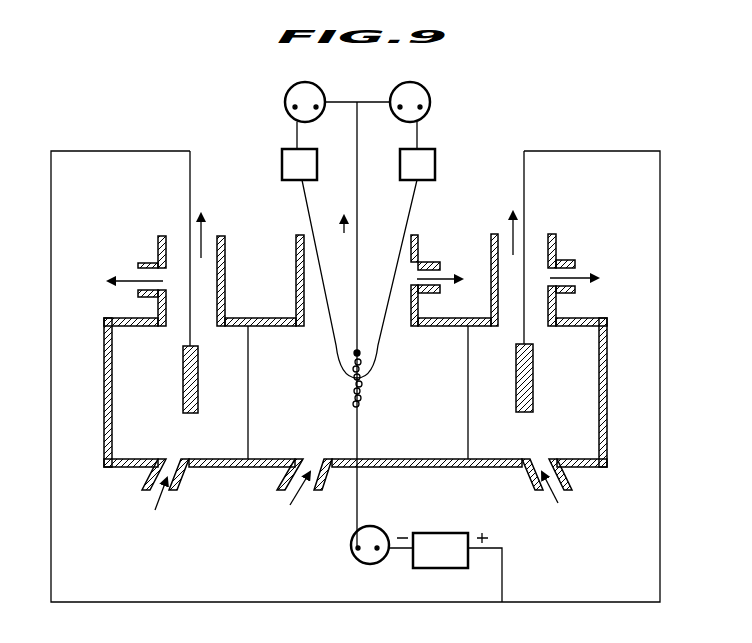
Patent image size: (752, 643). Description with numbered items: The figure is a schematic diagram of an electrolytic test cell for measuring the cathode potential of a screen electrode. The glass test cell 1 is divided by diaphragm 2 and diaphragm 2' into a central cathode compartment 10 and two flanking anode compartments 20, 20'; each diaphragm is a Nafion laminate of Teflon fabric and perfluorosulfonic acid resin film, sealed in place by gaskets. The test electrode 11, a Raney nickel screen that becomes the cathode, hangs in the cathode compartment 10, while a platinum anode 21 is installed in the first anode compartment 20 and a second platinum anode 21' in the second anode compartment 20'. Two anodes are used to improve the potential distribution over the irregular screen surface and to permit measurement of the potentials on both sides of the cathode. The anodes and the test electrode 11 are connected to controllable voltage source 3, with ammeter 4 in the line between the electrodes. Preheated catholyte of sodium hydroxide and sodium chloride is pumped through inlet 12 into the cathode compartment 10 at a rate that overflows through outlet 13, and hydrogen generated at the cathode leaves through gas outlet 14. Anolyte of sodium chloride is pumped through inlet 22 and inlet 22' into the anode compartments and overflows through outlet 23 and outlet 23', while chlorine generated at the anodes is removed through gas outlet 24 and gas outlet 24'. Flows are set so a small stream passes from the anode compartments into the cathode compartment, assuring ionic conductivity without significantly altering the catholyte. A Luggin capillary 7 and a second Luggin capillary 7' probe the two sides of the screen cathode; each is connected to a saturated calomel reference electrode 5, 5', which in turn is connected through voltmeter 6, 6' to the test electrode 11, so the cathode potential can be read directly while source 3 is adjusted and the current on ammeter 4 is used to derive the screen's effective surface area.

The test cell 1 is at (407, 467).
The diaphragm 2 is at (260, 392).
The diaphragm 2' is at (446, 392).
The controllable voltage source 3 is at (446, 561).
The ammeter 4 is at (352, 556).
The saturated calomel reference electrode 5 is at (299, 164).
The saturated calomel reference electrode 5' is at (417, 164).
The voltmeter 6 is at (310, 105).
The voltmeter 6' is at (426, 106).
The Luggin capillary 7 is at (321, 279).
The Luggin capillary 7' is at (393, 279).
The cathode compartment 10 is at (305, 402).
The test electrode 11 is at (352, 392).
The inlet 12 is at (284, 494).
The outlet 13 is at (440, 270).
The gas outlet 14 is at (412, 236).
The anode compartment 20 is at (138, 375).
The anode compartment 20' is at (566, 380).
The platinum anode 21 is at (173, 388).
The platinum anode 21' is at (506, 387).
The inlet 22 is at (155, 500).
The inlet 22' is at (560, 494).
The outlet 23 is at (132, 268).
The outlet 23' is at (586, 269).
The gas outlet 24 is at (190, 260).
The gas outlet 24' is at (537, 263).